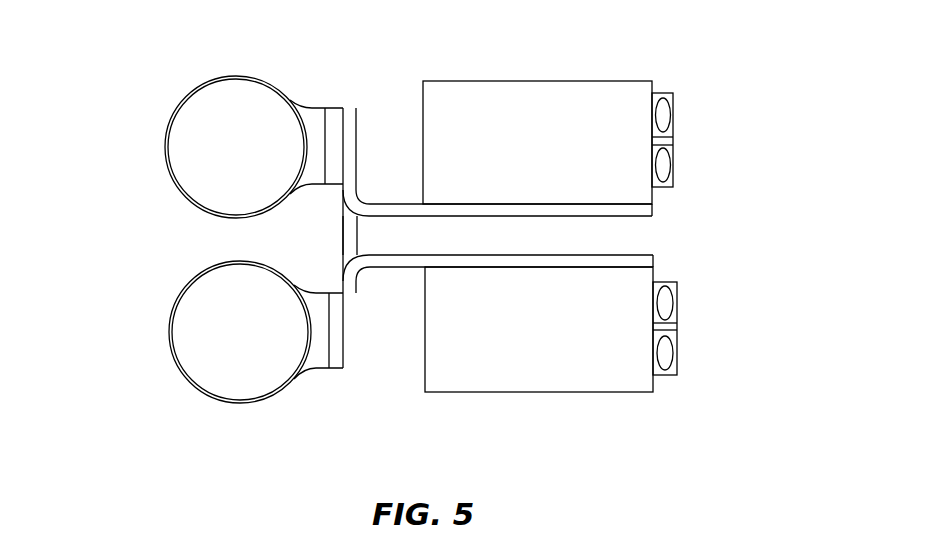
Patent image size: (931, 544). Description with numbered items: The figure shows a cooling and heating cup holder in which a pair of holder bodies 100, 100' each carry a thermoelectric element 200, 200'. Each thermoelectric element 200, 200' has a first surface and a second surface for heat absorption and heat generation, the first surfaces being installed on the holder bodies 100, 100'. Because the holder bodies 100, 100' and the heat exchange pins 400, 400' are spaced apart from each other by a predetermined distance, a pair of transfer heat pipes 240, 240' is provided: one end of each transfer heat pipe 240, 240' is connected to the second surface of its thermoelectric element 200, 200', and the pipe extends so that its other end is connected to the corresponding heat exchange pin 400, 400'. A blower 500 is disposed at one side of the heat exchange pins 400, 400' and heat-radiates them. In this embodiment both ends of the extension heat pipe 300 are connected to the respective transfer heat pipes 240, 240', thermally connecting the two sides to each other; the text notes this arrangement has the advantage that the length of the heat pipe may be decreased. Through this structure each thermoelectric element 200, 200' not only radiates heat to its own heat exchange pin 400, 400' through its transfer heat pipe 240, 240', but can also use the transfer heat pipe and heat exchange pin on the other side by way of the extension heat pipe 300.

The holder body 100 is at (180, 147).
The holder body 100' is at (179, 332).
The thermoelectric element 200 is at (314, 199).
The thermoelectric element 200' is at (311, 367).
The transfer heat pipe 240 is at (497, 162).
The transfer heat pipe 240' is at (498, 302).
The extension heat pipe 300 is at (350, 238).
The heat exchange pin 400 is at (537, 112).
The heat exchange pin 400' is at (539, 361).
The blower 500 is at (673, 153).